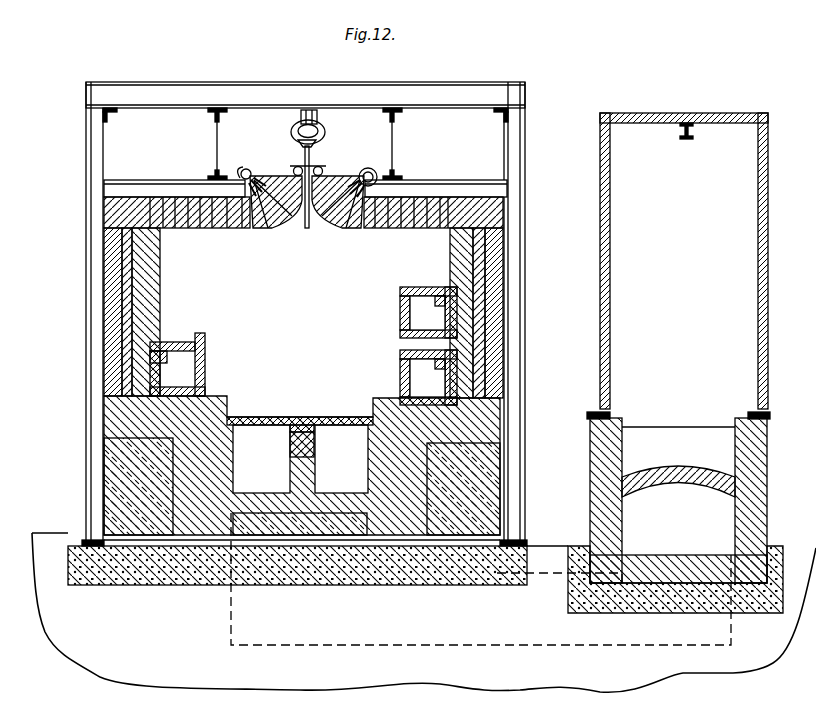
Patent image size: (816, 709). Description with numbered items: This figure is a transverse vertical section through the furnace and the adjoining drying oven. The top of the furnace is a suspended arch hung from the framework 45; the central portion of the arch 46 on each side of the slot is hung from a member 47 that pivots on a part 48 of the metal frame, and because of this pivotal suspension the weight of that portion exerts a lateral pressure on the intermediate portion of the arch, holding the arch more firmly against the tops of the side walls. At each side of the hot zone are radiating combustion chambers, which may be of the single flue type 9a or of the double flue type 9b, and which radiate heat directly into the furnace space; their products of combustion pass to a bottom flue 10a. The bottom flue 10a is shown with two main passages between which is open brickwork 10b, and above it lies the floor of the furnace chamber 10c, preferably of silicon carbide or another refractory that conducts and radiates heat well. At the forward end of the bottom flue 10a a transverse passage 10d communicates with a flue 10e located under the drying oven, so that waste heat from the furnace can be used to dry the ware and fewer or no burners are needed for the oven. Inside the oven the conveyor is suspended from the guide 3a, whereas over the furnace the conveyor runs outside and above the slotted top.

The guide 3a is at (310, 111).
The framework 45 is at (458, 100).
The central portion of the arch 46 is at (275, 177).
The member 47 is at (248, 168).
The part of the metal frame 48 is at (220, 192).
The single flue type combustion chamber 9a is at (174, 358).
The double flue type combustion chamber 9b is at (424, 302).
The bottom flue 10a is at (340, 445).
The open brickwork 10b is at (287, 437).
The floor of the furnace chamber 10c is at (322, 398).
The transverse passage 10d is at (545, 573).
The flue 10e is at (678, 500).